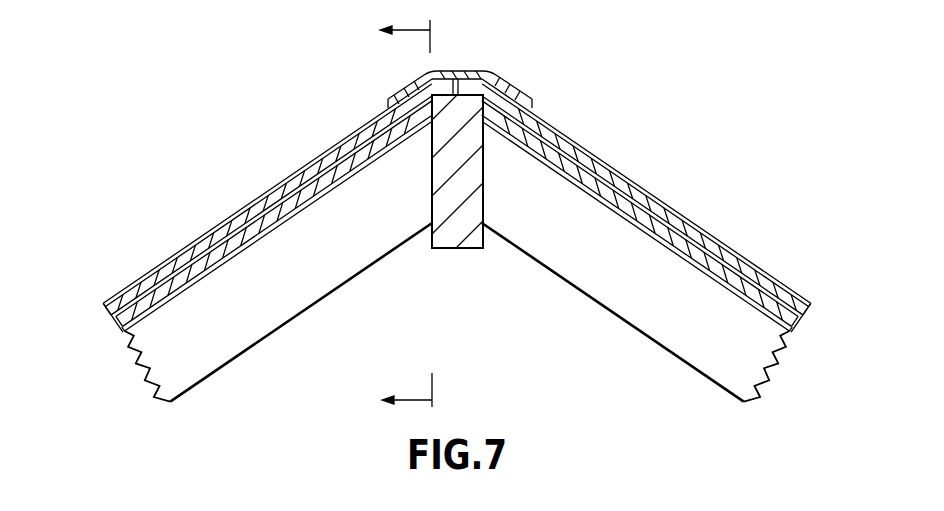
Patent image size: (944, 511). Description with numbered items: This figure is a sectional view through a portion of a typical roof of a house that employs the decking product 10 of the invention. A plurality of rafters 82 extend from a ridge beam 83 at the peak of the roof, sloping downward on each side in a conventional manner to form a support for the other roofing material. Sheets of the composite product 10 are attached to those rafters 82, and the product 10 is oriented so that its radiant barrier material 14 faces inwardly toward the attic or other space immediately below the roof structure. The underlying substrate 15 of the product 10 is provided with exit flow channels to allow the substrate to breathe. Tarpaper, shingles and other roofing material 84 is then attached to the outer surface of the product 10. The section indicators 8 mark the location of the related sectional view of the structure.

The section line 8- 8 is at (420, 215).
The composite product 10 is at (212, 282).
The radiant barrier material 14 is at (292, 212).
The underlying substrate 15 is at (112, 328).
The rafter 82 is at (230, 340).
The ridge beam 83 is at (463, 249).
The roofing material 84 is at (240, 217).